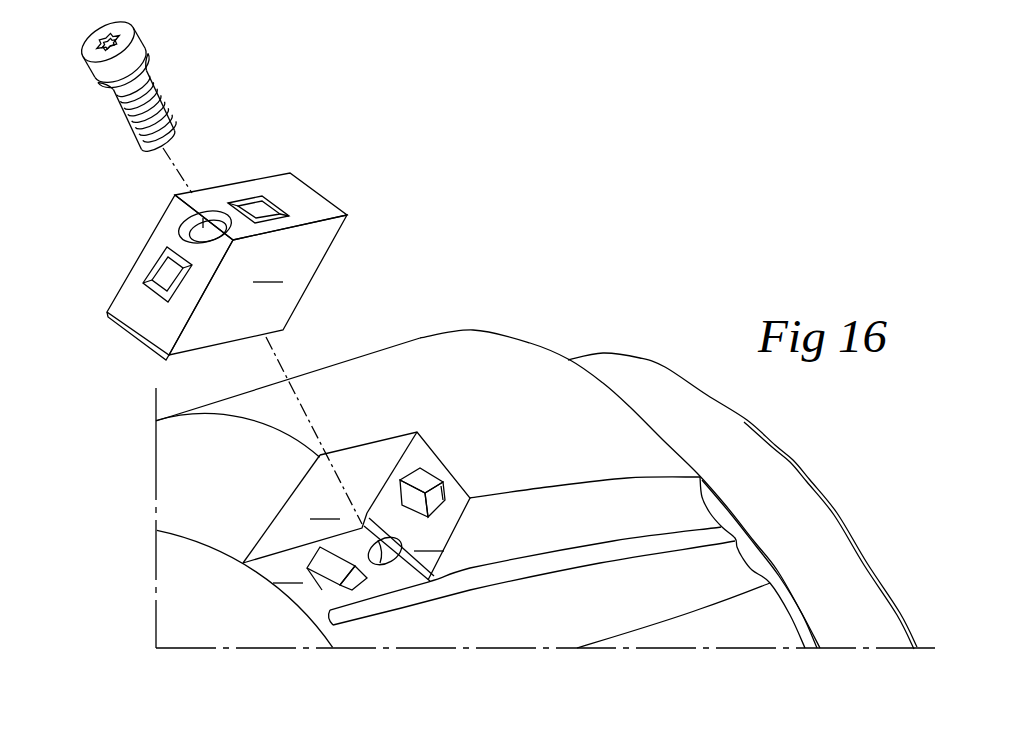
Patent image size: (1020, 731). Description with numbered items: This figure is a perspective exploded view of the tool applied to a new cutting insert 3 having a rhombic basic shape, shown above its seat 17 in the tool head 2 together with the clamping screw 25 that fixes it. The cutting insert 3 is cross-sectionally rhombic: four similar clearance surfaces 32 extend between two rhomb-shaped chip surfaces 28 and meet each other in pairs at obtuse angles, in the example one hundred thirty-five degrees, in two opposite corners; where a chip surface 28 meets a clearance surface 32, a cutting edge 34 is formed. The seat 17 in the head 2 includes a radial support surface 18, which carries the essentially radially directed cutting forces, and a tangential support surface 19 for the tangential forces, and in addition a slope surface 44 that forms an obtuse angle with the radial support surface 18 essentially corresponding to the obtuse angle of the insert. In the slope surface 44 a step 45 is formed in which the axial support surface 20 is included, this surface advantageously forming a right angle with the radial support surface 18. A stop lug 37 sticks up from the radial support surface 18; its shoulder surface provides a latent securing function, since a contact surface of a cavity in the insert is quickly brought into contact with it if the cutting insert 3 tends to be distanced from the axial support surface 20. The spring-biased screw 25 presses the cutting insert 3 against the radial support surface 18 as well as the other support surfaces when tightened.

The head 2 is at (545, 398).
The cutting insert 3 is at (259, 248).
The seat 17 is at (386, 501).
The radial support surface 18 is at (305, 548).
The tangential support surface 19 is at (330, 497).
The axial support surface 20 is at (412, 498).
The screw 25 is at (160, 56).
The chip surfaces 28 is at (258, 285).
The clearance surfaces 32 is at (285, 183).
The cutting edges 34 is at (181, 325).
The stop lug 37 is at (364, 588).
The slope surface 44 is at (404, 549).
The step 45 is at (452, 509).